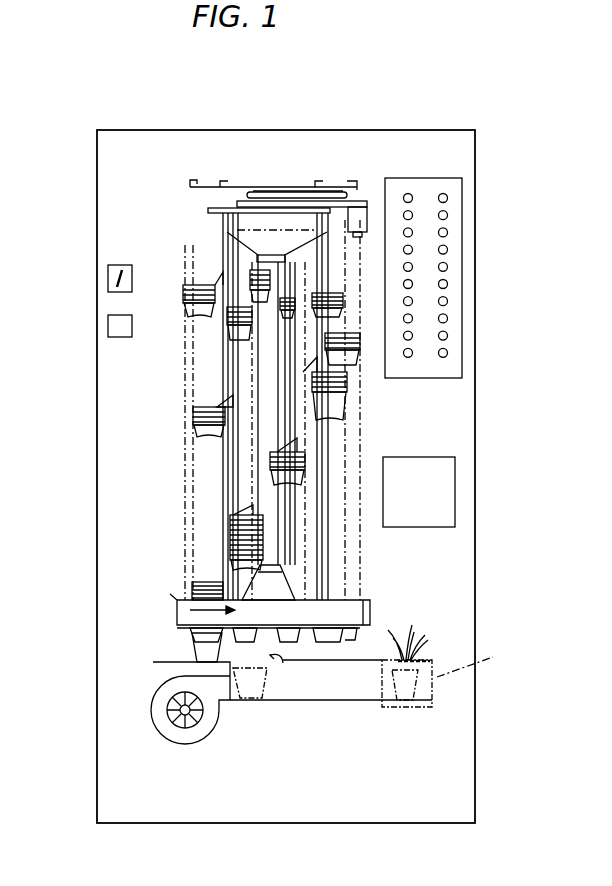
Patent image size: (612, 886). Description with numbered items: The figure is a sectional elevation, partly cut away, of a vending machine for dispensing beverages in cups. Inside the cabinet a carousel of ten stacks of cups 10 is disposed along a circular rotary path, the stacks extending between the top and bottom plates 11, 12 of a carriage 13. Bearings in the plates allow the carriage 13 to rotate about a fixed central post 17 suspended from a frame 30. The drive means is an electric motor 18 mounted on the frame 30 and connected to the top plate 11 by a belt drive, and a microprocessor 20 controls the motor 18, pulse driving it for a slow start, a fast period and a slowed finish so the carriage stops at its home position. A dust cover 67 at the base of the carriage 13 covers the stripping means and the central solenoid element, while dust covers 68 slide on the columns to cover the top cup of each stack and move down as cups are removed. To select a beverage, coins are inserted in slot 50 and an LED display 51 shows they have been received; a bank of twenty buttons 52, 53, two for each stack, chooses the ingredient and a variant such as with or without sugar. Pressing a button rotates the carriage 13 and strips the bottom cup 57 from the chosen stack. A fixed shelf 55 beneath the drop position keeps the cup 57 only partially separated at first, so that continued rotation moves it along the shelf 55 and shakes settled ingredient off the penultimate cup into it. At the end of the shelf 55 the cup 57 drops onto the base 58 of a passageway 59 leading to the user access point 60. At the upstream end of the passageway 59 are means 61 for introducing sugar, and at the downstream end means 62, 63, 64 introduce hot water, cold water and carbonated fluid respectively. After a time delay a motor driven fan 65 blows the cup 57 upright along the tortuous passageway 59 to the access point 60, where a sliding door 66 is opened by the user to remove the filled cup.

The stacks of cups 10 is at (197, 430).
The top plate 11 is at (212, 209).
The bottom plate 12 is at (197, 630).
The carriage 13 is at (188, 468).
The central post 17 is at (258, 357).
The electric motor 18 is at (360, 213).
The microprocessor 20 is at (445, 495).
The frame 30 is at (197, 180).
The slot 50 is at (108, 273).
The LED display 51 is at (108, 320).
The button 52 is at (408, 194).
The button 53 is at (443, 194).
The shelf 55 is at (160, 663).
The cup 57 is at (203, 642).
The base 58 is at (345, 697).
The passageway 59 is at (308, 687).
The access point 60 is at (434, 690).
The means for introducing sugar 61 is at (277, 663).
The means for introducing hot water 62 is at (398, 658).
The means for introducing cold water 63 is at (408, 658).
The means for introducing carbonated fluid 64 is at (418, 652).
The motor driven fan 65 is at (152, 710).
The sliding door 66 is at (479, 661).
The dust cover 67 is at (177, 596).
The dust covers 68 is at (222, 405).